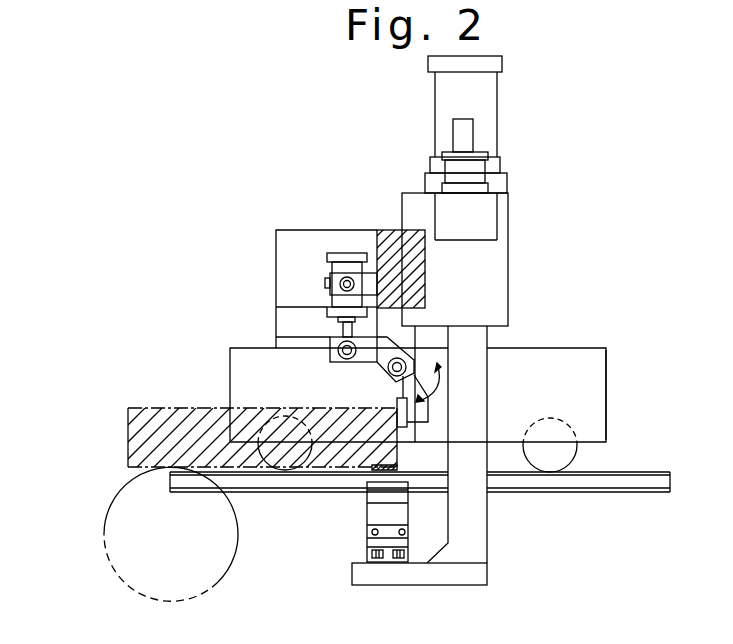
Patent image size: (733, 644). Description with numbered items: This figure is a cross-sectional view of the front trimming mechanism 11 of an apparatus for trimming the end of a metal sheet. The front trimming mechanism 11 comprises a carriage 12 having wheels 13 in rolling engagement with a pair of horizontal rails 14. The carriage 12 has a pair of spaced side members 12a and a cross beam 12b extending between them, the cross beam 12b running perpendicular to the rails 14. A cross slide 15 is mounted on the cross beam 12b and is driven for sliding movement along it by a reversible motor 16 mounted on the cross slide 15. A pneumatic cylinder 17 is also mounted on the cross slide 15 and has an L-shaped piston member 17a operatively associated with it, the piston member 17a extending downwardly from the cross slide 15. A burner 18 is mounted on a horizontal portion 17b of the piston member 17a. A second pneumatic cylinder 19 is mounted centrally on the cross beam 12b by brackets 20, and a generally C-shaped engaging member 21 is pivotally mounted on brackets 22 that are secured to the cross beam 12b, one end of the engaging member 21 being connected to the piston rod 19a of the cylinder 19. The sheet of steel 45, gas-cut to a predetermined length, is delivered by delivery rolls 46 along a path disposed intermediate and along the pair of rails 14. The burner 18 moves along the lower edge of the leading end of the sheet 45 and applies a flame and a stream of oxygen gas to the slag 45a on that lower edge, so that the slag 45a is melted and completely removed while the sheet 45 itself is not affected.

The front trimming mechanism 11 is at (548, 157).
The carriage 12 is at (552, 353).
The side members 12a is at (597, 393).
The cross beam 12b is at (390, 232).
The wheels 13 is at (262, 464).
The horizontal rails 14 is at (620, 482).
The cross slide 15 is at (500, 260).
The reversible motor 16 is at (467, 130).
The pneumatic cylinder 17 is at (488, 90).
The L-shaped piston member 17a is at (487, 531).
The horizontal portion 17b is at (386, 578).
The burner 18 is at (377, 517).
The pneumatic cylinder 19 is at (332, 252).
The piston rod 19a is at (342, 327).
The brackets 20 is at (368, 279).
The C-shaped engaging member 21 is at (369, 363).
The brackets 22 is at (393, 318).
The sheet of steel 45 is at (170, 406).
The slag 45a is at (373, 468).
The delivery rolls 46 is at (205, 593).